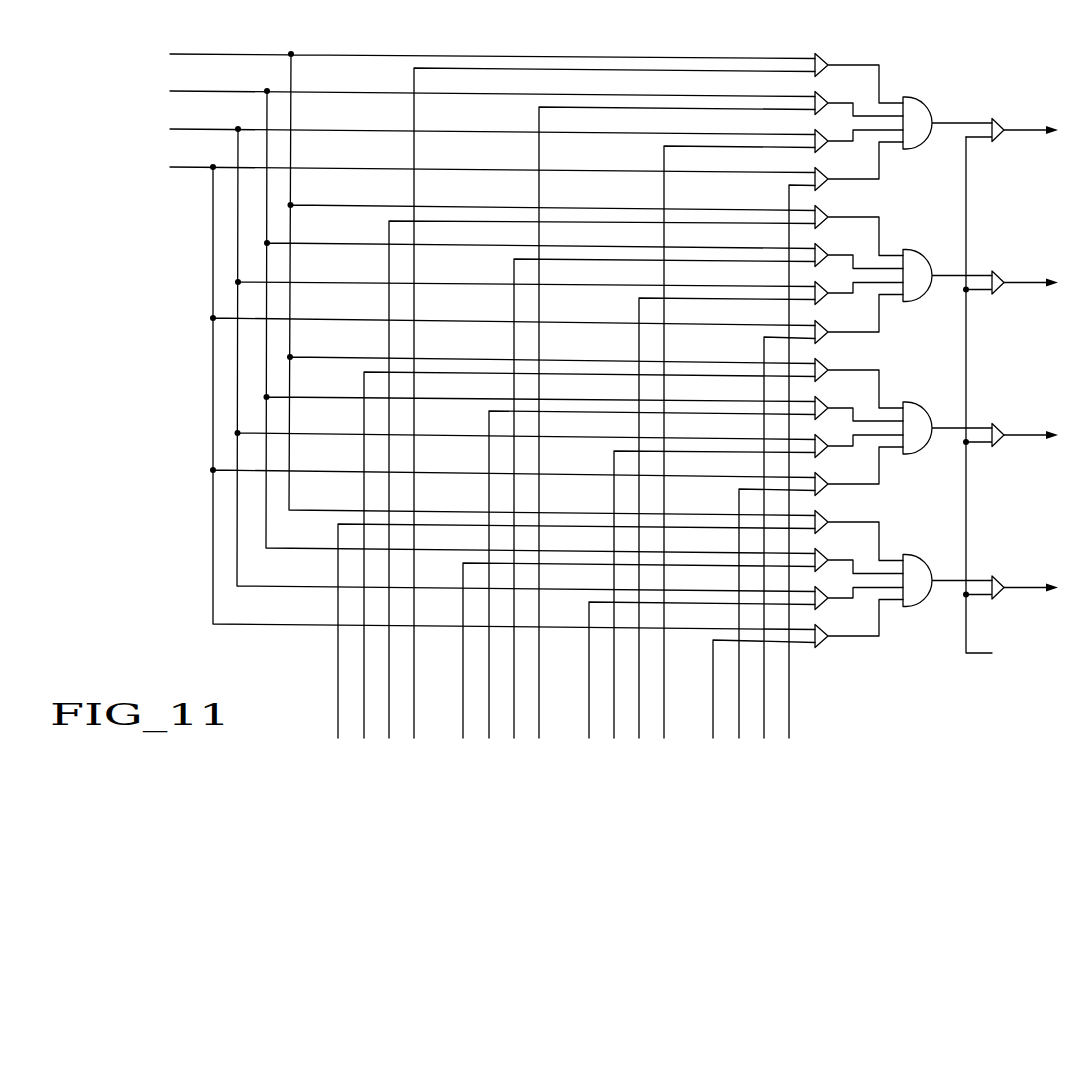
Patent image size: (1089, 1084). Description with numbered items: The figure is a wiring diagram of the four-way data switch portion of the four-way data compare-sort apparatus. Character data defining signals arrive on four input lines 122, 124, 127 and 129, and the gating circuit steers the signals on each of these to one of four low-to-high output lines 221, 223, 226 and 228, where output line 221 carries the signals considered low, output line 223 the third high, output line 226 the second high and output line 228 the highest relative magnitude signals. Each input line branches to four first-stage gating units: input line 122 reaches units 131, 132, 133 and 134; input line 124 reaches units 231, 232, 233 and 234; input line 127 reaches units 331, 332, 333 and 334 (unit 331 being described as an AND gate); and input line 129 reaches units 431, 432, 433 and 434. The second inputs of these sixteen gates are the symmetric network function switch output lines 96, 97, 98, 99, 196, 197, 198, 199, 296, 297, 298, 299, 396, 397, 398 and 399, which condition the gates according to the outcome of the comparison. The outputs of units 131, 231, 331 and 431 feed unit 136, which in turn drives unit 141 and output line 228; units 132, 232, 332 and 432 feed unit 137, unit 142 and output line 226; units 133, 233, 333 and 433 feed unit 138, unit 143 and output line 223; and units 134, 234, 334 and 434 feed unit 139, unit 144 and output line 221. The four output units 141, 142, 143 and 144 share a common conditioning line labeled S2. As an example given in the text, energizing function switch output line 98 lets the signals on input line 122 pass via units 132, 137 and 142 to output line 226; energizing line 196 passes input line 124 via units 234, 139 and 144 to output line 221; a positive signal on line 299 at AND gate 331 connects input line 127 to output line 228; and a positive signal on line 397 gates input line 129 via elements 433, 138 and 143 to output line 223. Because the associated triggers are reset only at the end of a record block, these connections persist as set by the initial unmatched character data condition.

The input line 122 is at (231, 55).
The input line 124 is at (231, 91).
The input line 127 is at (219, 136).
The input line 129 is at (183, 166).
The function switch output line 96 is at (339, 643).
The function switch output line 97 is at (363, 656).
The function switch output line 98 is at (392, 682).
The function switch output line 99 is at (416, 697).
The function switch output line 196 is at (463, 644).
The function switch output line 197 is at (488, 656).
The function switch output line 198 is at (516, 686).
The function switch output line 199 is at (546, 694).
The function switch output line 296 is at (589, 644).
The function switch output line 297 is at (613, 656).
The function switch output line 298 is at (641, 688).
The function switch output line 299 is at (666, 700).
The function switch output line 396 is at (713, 644).
The function switch output line 397 is at (738, 656).
The function switch output line 398 is at (766, 688).
The function switch output line 399 is at (791, 700).
The unit 131 is at (822, 64).
The unit 231 is at (821, 104).
The AND gate 331 is at (822, 140).
The unit 431 is at (822, 177).
The unit 132 is at (822, 216).
The unit 232 is at (821, 256).
The unit 332 is at (822, 292).
The unit 432 is at (822, 330).
The unit 133 is at (822, 369).
The unit 233 is at (821, 409).
The unit 333 is at (822, 445).
The element 433 is at (822, 482).
The unit 134 is at (822, 521).
The unit 234 is at (821, 561).
The unit 334 is at (822, 597).
The unit 434 is at (822, 634).
The unit 136 is at (907, 104).
The unit 137 is at (912, 262).
The unit 138 is at (912, 413).
The unit 139 is at (912, 565).
The unit 141 is at (995, 130).
The unit 142 is at (993, 282).
The unit 143 is at (996, 434).
The unit 144 is at (998, 590).
The output line 228 is at (1018, 131).
The output line 226 is at (1006, 283).
The output line 223 is at (1018, 437).
The output line 221 is at (1009, 584).
The strobe signal S2 is at (992, 401).